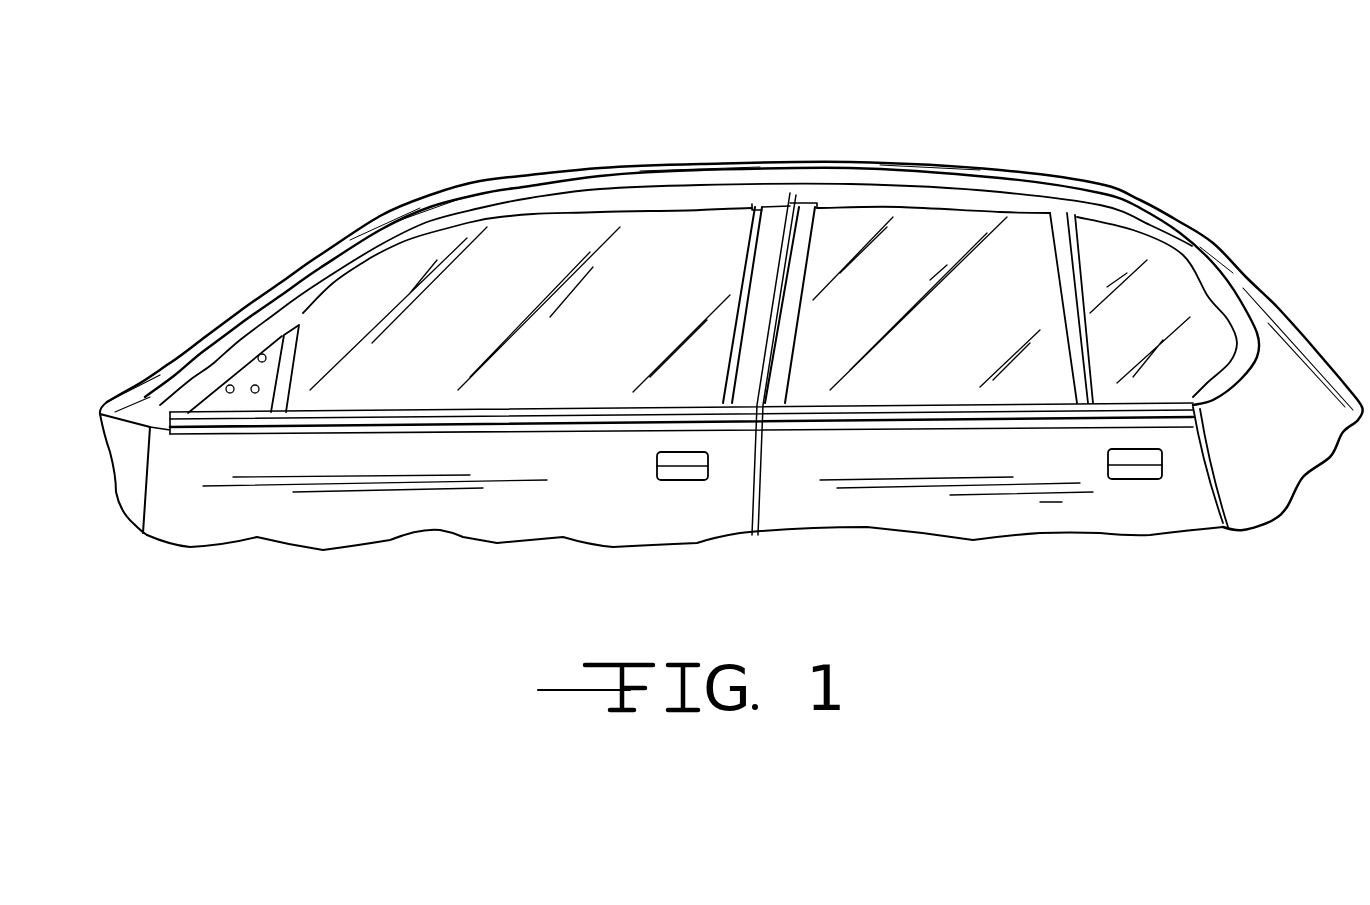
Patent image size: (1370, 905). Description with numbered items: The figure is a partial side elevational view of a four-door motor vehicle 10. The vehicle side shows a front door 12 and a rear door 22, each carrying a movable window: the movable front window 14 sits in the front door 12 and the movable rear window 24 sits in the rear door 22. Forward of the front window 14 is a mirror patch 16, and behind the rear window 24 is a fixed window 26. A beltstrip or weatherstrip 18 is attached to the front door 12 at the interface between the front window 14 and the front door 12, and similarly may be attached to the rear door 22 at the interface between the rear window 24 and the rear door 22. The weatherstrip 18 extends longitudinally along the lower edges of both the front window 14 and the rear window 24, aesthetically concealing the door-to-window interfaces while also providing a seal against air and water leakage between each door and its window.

The motor vehicle 10 is at (297, 180).
The front door 12 is at (310, 503).
The front window 14 is at (502, 235).
The mirror patch 16 is at (243, 377).
The weatherstrip 18 is at (615, 408).
The rear door 22 is at (990, 520).
The rear window 24 is at (867, 237).
The fixed window 26 is at (1160, 287).